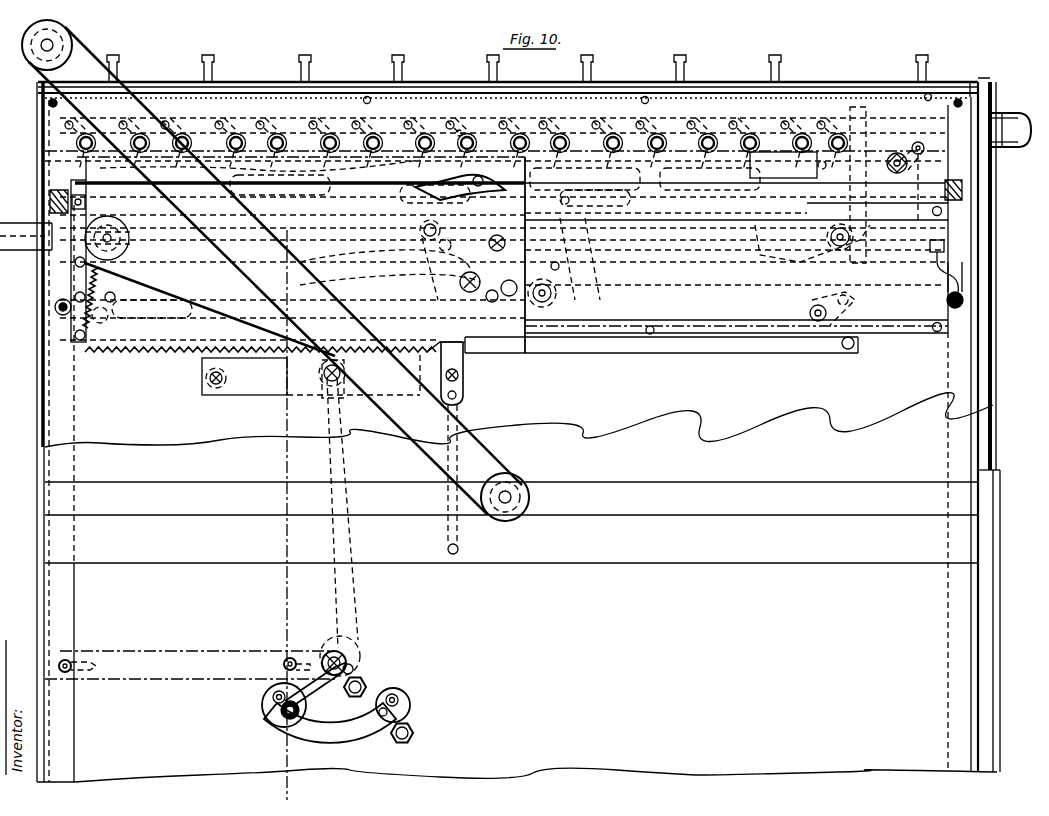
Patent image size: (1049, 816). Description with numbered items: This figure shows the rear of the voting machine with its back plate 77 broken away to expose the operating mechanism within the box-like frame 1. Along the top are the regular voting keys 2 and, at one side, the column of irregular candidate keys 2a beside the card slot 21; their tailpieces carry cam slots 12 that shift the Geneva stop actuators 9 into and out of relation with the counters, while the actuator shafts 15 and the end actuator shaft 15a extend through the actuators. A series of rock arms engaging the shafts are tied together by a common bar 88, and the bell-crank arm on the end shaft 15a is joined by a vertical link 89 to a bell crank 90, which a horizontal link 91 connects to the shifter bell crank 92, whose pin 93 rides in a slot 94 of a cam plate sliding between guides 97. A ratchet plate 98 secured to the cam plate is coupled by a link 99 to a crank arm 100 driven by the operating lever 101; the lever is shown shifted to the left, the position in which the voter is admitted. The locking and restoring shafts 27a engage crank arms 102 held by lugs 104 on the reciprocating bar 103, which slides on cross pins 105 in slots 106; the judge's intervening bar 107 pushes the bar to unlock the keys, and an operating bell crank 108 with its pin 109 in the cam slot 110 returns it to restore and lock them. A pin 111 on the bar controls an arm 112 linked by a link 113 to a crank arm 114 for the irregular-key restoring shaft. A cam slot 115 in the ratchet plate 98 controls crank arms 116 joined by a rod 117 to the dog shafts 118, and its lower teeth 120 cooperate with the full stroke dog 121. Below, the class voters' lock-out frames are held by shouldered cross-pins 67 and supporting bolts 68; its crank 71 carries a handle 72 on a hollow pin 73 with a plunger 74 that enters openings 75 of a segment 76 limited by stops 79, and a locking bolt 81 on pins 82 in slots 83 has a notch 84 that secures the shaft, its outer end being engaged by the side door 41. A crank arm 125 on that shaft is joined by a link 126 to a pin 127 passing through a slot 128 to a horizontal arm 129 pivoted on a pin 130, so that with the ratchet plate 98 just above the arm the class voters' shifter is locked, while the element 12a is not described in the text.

The box-like frame 1 is at (975, 360).
The voting keys 2 is at (302, 62).
The irregular candidate keys 2a is at (915, 66).
The Geneva stop actuator 9 is at (255, 247).
The cam slots 12 is at (48, 262).
The bar roller 12a is at (58, 302).
The actuator shafts 15 is at (300, 127).
The end actuator shaft 15a is at (833, 160).
The slot 21 is at (985, 86).
The locking and restoring shaft 27a is at (495, 252).
The side door 41 is at (37, 497).
The shouldered cross-pins 67 is at (205, 120).
The supporting bolts 68 is at (414, 733).
The crank 71 is at (322, 686).
The handle 72 is at (284, 714).
The hollow pin 73 is at (70, 258).
The plunger 74 is at (296, 722).
The openings 75 is at (390, 712).
The segment 76 is at (376, 734).
The back plate 77 is at (388, 762).
The stops 79 is at (273, 698).
The locking bolt 81 is at (178, 650).
The pins 82 is at (70, 660).
The slots 83 is at (92, 664).
The notch 84 is at (356, 670).
The common bar 88 is at (900, 316).
The vertical link 89 is at (858, 196).
The bell crank 90 is at (825, 305).
The horizontal link 91 is at (665, 350).
The shifter or operating bell crank 92 is at (432, 266).
The pin 93 is at (503, 268).
The slot 94 is at (366, 264).
The guides 97 is at (668, 322).
The ratchet plate 98 is at (482, 353).
The link 99 is at (168, 270).
The crank arm 100 is at (262, 290).
The operating lever 101 is at (486, 456).
The crank arms 102 is at (562, 132).
The reciprocating bar 103 is at (622, 222).
The lugs 104 is at (620, 190).
The cross pins 105 is at (268, 214).
The slots 106 is at (190, 222).
The intervening bar 107 is at (562, 197).
The operating bell crank 108 is at (560, 263).
The pin 109 is at (542, 282).
The cam slot 110 is at (418, 290).
The pin 111 is at (808, 207).
The arm 112 is at (800, 256).
The link 113 is at (918, 166).
The crank arm 114 is at (905, 150).
The cam slot 115 is at (472, 192).
The crank arms 116 is at (376, 130).
The rod 117 is at (462, 130).
The shafts 118 is at (668, 218).
The teeth 120 is at (143, 357).
The full stroke dog 121 is at (463, 382).
The crank arm 125 is at (352, 660).
The link 126 is at (345, 592).
The pin 127 is at (332, 398).
The slot 128 is at (320, 380).
The horizontal arm 129 is at (232, 392).
The pivoted pin 130 is at (208, 380).